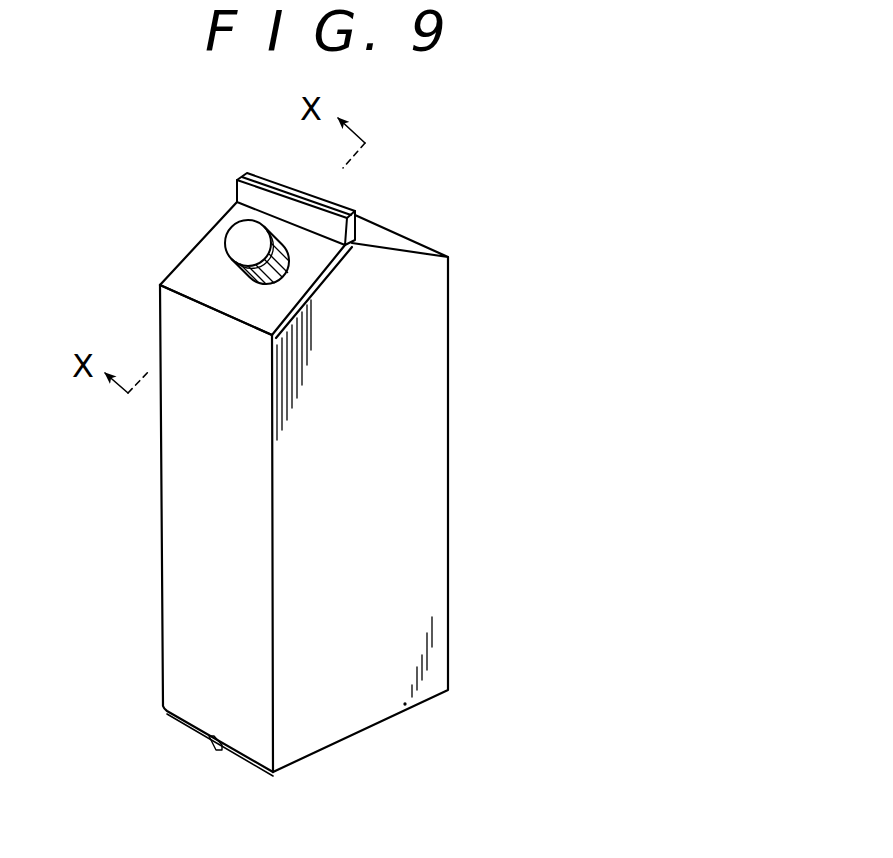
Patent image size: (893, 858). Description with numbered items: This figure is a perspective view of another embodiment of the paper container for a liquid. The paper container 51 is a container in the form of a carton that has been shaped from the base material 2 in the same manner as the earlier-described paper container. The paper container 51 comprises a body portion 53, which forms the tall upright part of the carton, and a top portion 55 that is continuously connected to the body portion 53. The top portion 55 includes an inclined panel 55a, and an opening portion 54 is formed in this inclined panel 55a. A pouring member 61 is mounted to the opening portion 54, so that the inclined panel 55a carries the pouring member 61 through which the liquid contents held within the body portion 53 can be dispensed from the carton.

The base material 2 is at (188, 622).
The paper container 51 is at (517, 215).
The body portion 53 is at (457, 502).
The opening portion 54 is at (262, 258).
The top portion 55 is at (397, 227).
The inclined panel 55a is at (187, 278).
The pouring member 61 is at (220, 243).